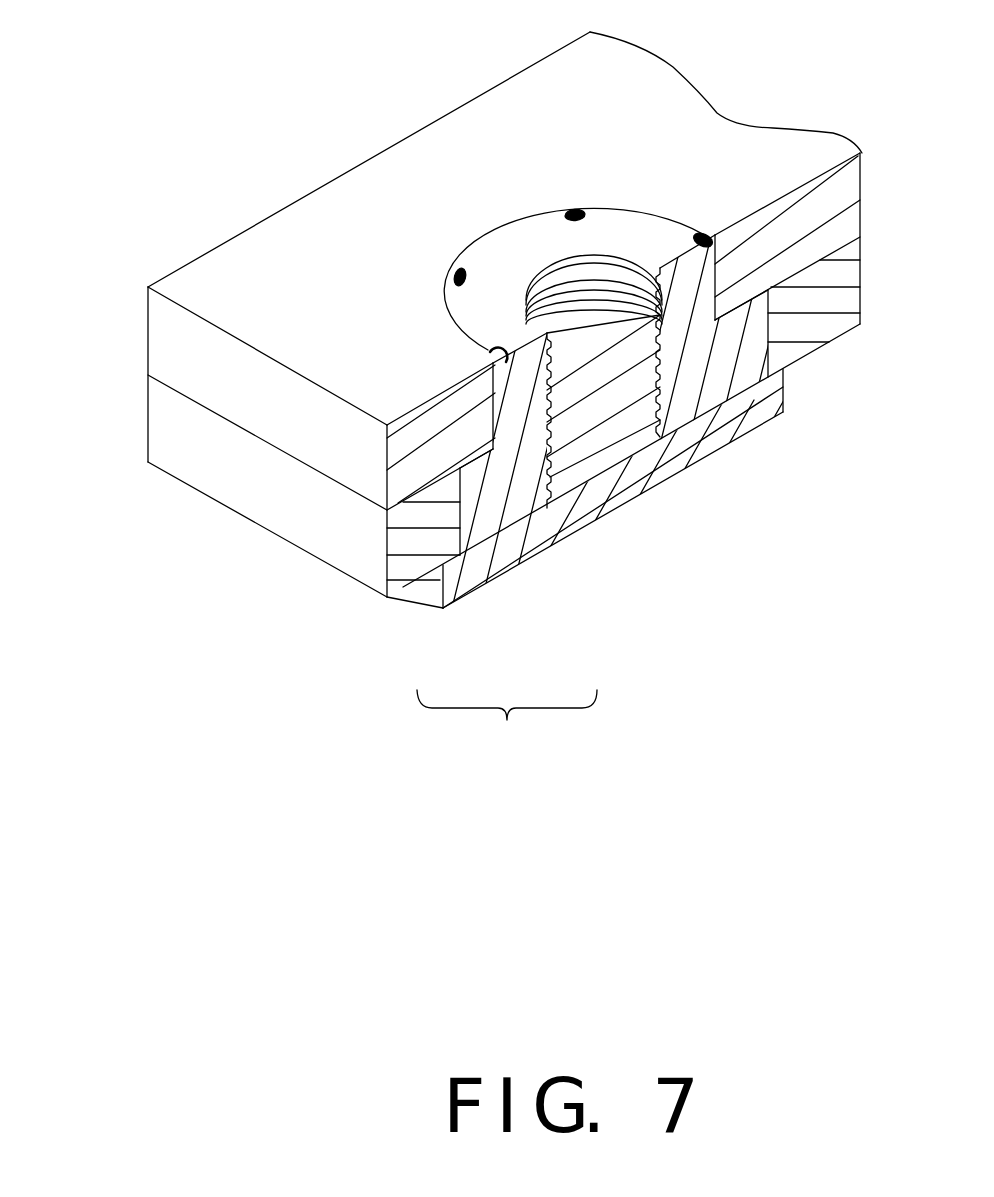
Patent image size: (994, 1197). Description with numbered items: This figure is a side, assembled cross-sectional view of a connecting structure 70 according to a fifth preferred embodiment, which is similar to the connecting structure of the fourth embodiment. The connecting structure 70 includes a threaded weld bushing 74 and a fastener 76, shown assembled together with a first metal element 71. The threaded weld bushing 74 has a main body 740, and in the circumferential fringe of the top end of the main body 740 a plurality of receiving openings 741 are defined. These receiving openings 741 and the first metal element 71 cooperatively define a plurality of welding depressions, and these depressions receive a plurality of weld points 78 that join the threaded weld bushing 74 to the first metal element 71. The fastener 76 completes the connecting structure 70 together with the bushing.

The connecting structure 70 is at (507, 729).
The first metal element 71 is at (367, 218).
The threaded weld bushing 74 is at (492, 498).
The fastener 76 is at (533, 540).
The weld points 78 is at (567, 212).
The main body 740 is at (688, 295).
The receiving openings 741 is at (490, 350).